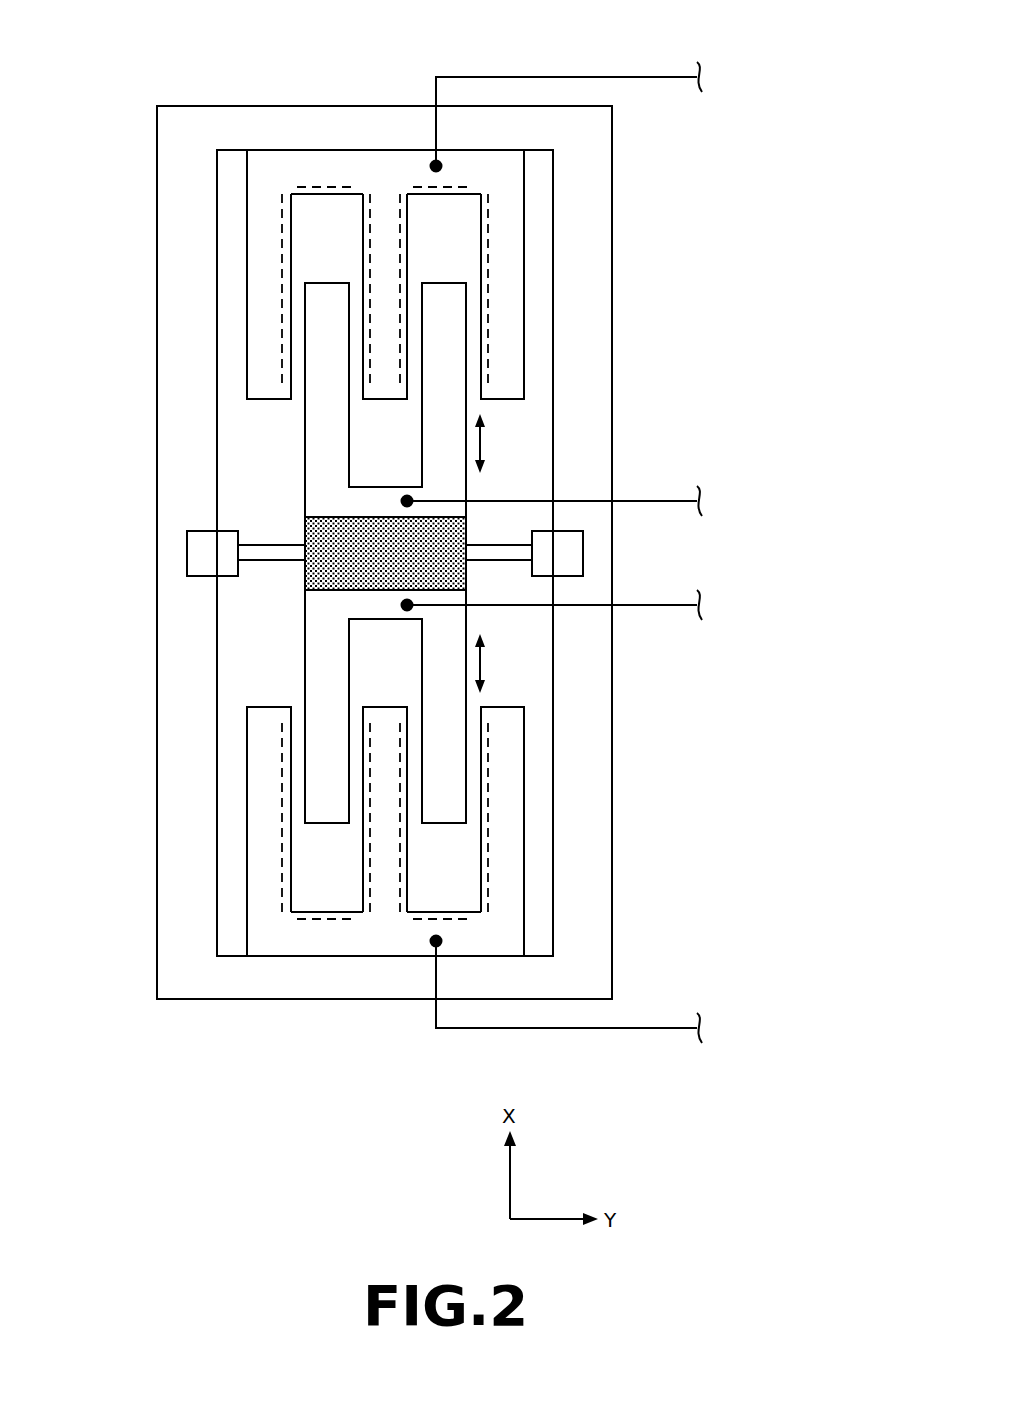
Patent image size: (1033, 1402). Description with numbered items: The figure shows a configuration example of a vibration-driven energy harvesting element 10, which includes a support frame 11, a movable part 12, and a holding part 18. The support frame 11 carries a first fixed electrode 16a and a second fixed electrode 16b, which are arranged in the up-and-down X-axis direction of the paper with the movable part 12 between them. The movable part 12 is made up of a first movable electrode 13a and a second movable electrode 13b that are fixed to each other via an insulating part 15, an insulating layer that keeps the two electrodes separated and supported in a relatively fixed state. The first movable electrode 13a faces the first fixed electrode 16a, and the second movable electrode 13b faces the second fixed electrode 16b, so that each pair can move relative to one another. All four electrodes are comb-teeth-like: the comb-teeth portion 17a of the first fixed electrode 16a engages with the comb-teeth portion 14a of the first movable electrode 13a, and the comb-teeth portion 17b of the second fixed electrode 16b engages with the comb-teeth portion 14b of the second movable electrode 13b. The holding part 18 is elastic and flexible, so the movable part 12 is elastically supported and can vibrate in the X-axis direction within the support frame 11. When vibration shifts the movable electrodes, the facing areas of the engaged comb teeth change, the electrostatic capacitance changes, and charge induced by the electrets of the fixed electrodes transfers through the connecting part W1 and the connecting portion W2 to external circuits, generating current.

The vibration-driven energy harvesting element 10 is at (760, 47).
The support frame 11 is at (218, 106).
The movable part 12 is at (100, 443).
The first movable electrode 13a is at (285, 400).
The second movable electrode 13b is at (285, 706).
The comb-teeth portion 14a is at (305, 418).
The comb-teeth portion 14b is at (305, 690).
The insulating part 15 is at (305, 530).
The first fixed electrode 16a is at (372, 158).
The second fixed electrode 16b is at (368, 948).
The comb-teeth portion 17a is at (247, 265).
The comb-teeth portion 17b is at (247, 838).
The holding part 18 is at (283, 561).
The connecting part W1 is at (640, 77).
The connecting portion W2 is at (640, 1028).